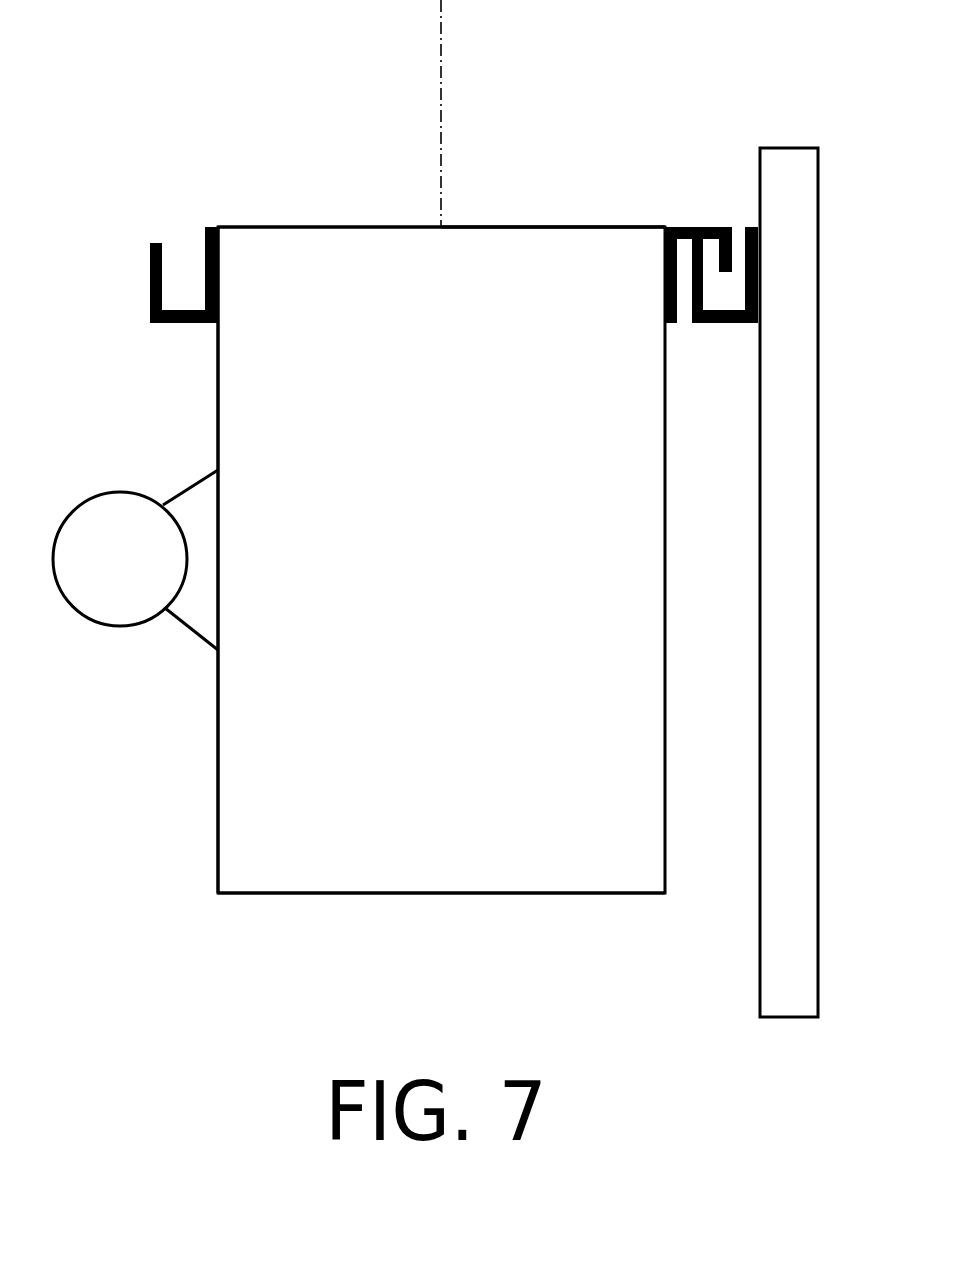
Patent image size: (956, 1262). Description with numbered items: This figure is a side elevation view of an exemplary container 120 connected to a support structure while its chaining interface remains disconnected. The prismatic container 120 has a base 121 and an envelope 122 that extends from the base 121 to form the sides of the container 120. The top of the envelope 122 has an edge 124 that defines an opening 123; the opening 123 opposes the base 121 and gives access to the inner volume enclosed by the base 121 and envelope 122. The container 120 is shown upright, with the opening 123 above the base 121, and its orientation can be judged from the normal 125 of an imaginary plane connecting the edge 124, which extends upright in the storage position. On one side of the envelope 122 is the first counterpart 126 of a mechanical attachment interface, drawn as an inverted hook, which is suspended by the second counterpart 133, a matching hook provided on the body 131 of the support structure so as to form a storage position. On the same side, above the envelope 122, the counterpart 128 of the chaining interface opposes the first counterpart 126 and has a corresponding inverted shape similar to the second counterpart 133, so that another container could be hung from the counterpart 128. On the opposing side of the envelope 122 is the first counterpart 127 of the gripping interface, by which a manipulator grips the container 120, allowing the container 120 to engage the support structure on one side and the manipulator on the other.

The container 120 is at (480, 580).
The base 121 is at (565, 895).
The envelope 122 is at (218, 720).
The opening 123 is at (312, 212).
The edge 124 is at (540, 225).
The normal 125 is at (440, 70).
The first counterpart of the attachment interface 126 is at (682, 225).
The first counterpart of the gripping interface 127 is at (127, 505).
The counterpart of the chaining interface 128 is at (155, 240).
The body of the support structure 131 is at (780, 920).
The second counterpart of the attachment interface 133 is at (752, 225).